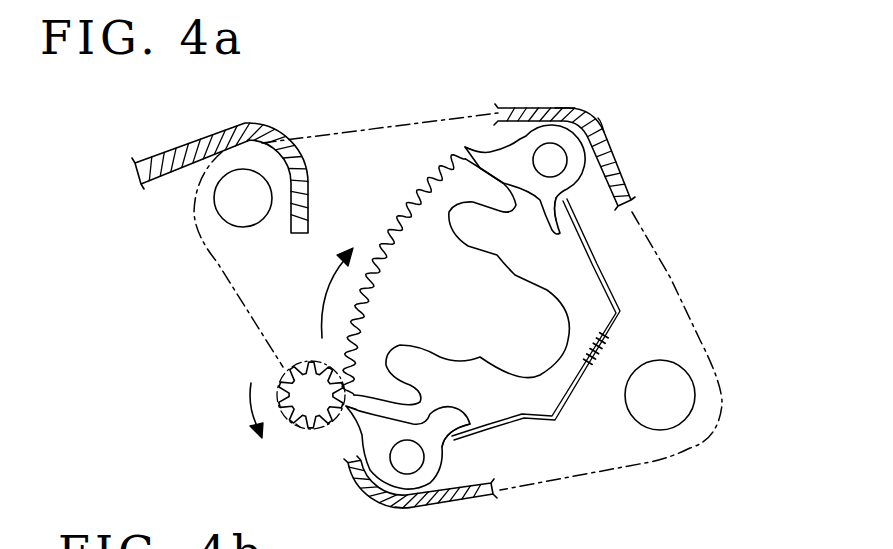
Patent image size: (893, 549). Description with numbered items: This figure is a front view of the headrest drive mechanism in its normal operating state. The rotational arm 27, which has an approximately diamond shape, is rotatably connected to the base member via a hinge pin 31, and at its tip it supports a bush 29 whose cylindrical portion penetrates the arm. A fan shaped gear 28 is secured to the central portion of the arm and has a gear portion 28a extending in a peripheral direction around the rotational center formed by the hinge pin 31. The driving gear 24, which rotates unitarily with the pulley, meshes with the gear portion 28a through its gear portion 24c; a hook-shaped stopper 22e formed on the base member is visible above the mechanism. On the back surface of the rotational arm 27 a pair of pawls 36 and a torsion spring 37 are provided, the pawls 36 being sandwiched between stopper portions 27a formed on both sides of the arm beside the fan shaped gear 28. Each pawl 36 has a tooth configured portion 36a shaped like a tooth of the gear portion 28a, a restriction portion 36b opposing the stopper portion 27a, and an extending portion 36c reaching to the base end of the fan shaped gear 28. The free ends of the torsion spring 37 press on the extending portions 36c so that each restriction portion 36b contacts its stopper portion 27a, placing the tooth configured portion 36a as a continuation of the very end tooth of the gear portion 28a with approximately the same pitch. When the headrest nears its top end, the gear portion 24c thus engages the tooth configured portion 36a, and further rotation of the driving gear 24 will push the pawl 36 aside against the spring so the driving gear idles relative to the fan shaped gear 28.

The stopper at upward direction side 22e is at (256, 122).
The driving gear 24 is at (286, 408).
The gear portion 24c is at (286, 424).
The rotational arm 27 is at (670, 275).
The stopper portion 27a is at (317, 272).
The fan shaped gear 28 is at (446, 280).
The gear portion 28a is at (383, 236).
The bush 29 is at (225, 218).
The hinge pin 31 is at (694, 411).
The pawl 36 is at (491, 276).
The tooth configured portion 36a is at (467, 147).
The restriction portion 36b is at (577, 109).
The extending portion 36c is at (560, 223).
The torsion spring 37 is at (519, 421).